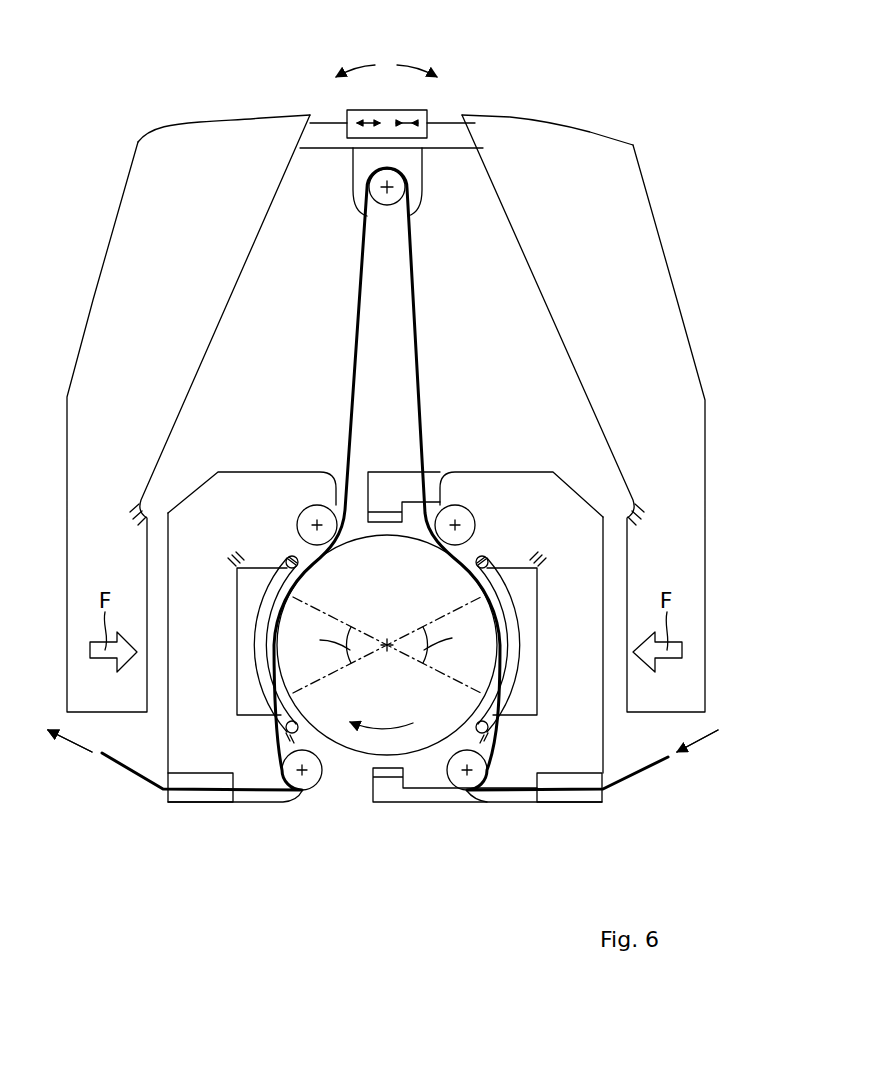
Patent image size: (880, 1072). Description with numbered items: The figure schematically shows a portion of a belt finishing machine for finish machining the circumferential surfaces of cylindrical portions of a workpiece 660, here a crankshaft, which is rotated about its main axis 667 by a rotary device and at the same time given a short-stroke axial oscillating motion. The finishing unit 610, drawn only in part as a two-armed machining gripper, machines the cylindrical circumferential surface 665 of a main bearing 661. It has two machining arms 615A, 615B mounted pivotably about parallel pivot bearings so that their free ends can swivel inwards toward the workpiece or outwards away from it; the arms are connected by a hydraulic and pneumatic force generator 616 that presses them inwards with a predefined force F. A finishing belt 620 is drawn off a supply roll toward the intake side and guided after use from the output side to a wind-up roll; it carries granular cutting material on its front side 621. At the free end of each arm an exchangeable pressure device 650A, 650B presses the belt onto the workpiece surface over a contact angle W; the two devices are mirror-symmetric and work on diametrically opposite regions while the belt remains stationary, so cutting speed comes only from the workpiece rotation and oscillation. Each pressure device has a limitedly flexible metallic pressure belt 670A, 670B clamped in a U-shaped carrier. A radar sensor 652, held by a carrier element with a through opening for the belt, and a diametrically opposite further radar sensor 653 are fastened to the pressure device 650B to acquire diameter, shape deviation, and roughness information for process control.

The finishing unit 610 is at (684, 100).
The hydraulic and pneumatic force generator 616 is at (429, 112).
The machining arm 615A is at (145, 206).
The machining arm 615B is at (635, 218).
The pressure device 650A is at (268, 460).
The pressure device 650B is at (522, 460).
The radar sensor 652 is at (393, 518).
The further radar sensor 653 is at (387, 772).
The metallic pressure belt 670A is at (270, 600).
The metallic pressure belt 670B is at (505, 600).
The main bearing 661 is at (362, 705).
The main axis 667 is at (386, 622).
The circumferential surface 665 is at (336, 752).
The workpiece 660 is at (353, 781).
The finishing belt 620 is at (625, 781).
The front side 621 is at (659, 768).